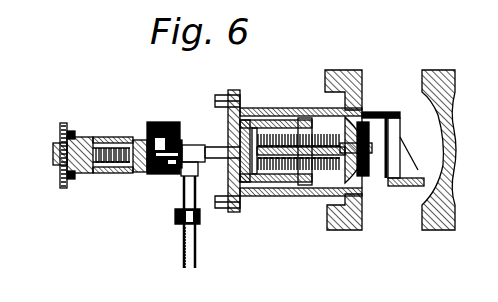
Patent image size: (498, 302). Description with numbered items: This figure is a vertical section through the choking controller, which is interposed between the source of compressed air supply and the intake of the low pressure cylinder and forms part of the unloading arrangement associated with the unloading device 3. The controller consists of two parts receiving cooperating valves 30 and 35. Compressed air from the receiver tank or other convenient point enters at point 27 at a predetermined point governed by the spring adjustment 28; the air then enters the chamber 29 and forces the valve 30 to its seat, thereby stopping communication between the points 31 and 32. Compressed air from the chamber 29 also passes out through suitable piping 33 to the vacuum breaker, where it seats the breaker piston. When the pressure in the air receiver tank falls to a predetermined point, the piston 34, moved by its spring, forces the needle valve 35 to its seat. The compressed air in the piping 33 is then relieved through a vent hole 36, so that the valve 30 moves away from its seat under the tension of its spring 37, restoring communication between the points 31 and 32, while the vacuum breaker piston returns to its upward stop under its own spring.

The unloading device 3 is at (283, 106).
The compressed air entry point 27 is at (158, 123).
The spring adjustment 28 is at (62, 172).
The chamber 29 is at (191, 154).
The valve 30 is at (358, 170).
The point 31 is at (385, 230).
The point 32 is at (392, 70).
The piping 33 is at (193, 267).
The piston 34 is at (136, 172).
The needle valve 35 is at (162, 170).
The vent hole 36 is at (172, 217).
The spring 37 is at (301, 151).